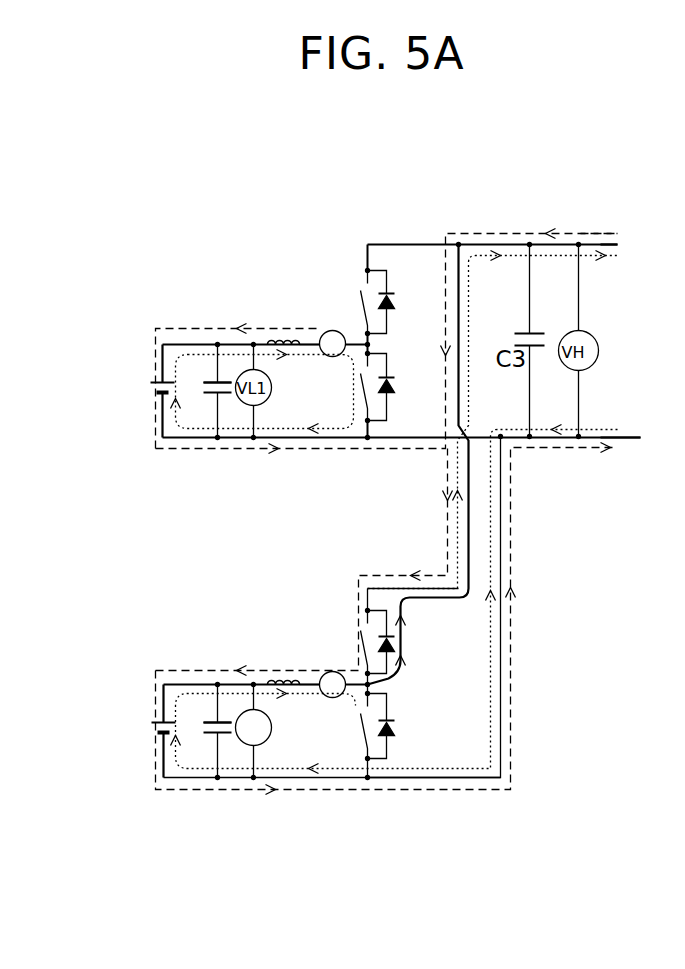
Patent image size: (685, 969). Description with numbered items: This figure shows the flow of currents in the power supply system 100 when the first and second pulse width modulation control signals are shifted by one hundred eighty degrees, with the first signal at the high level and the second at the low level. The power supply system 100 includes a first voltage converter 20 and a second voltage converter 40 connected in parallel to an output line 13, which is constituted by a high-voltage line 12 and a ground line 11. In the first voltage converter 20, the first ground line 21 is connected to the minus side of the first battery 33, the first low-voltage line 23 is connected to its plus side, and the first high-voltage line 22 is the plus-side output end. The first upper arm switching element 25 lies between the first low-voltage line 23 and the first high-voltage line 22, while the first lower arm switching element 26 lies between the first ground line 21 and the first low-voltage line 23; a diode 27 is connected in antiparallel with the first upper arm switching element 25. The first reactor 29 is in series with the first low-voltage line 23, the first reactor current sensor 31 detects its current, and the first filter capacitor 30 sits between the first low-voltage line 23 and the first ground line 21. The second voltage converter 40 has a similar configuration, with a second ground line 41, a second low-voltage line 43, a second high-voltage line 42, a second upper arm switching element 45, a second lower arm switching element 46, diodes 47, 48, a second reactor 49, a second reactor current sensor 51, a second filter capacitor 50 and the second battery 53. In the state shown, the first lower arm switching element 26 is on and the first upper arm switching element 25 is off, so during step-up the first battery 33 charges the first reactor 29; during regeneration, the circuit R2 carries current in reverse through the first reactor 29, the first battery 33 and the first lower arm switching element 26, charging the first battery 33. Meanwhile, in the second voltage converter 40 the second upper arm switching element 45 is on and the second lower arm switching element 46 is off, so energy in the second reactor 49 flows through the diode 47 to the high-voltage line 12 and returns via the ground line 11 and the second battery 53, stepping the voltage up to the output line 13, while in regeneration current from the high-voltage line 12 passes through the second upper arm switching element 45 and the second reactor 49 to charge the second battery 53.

The power supply system 100 is at (195, 195).
The first voltage converter 20 is at (310, 178).
The second voltage converter 40 is at (143, 792).
The ground line 11 is at (612, 447).
The high-voltage line 12 is at (593, 236).
The output line 13 is at (565, 200).
The first ground line 21 is at (393, 442).
The first high-voltage line 22 is at (413, 242).
The first low-voltage line 23 is at (230, 325).
The first upper arm switching element 25 is at (363, 266).
The first lower arm switching element 26 is at (350, 412).
The diode 27 is at (396, 305).
The first reactor 29 is at (260, 325).
The first filter capacitor 30 is at (210, 377).
The first reactor current sensor 31 is at (318, 322).
The first battery 33 is at (155, 374).
The second ground line 41 is at (470, 790).
The second high-voltage line 42 is at (430, 575).
The second low-voltage line 43 is at (198, 667).
The second upper arm switching element 45 is at (355, 640).
The second lower arm switching element 46 is at (362, 788).
The diode 47 is at (407, 643).
The diode 48 is at (392, 735).
The second reactor 49 is at (258, 668).
The second filter capacitor 50 is at (210, 717).
The second reactor current sensor 51 is at (318, 668).
The second battery 53 is at (155, 716).
The circuit R2 is at (197, 455).